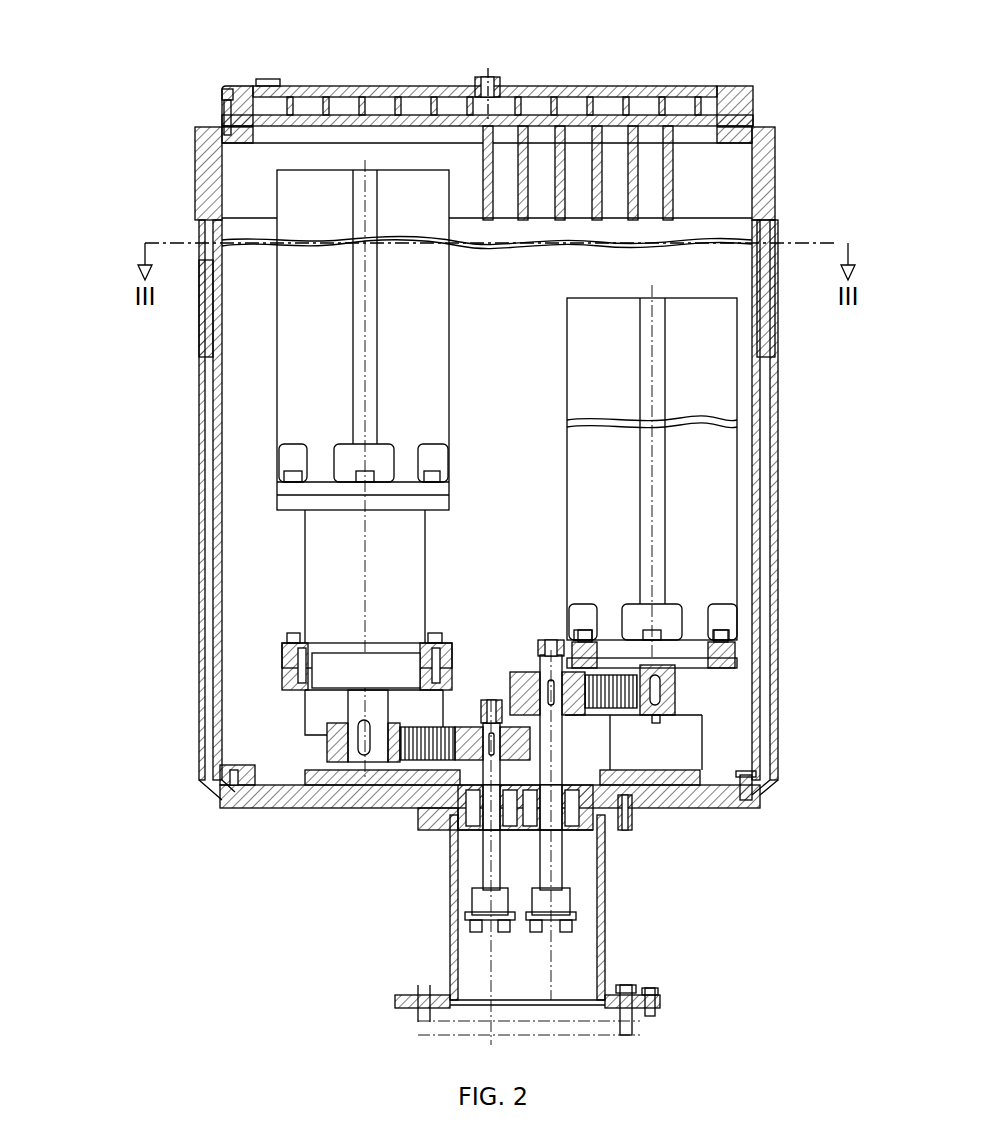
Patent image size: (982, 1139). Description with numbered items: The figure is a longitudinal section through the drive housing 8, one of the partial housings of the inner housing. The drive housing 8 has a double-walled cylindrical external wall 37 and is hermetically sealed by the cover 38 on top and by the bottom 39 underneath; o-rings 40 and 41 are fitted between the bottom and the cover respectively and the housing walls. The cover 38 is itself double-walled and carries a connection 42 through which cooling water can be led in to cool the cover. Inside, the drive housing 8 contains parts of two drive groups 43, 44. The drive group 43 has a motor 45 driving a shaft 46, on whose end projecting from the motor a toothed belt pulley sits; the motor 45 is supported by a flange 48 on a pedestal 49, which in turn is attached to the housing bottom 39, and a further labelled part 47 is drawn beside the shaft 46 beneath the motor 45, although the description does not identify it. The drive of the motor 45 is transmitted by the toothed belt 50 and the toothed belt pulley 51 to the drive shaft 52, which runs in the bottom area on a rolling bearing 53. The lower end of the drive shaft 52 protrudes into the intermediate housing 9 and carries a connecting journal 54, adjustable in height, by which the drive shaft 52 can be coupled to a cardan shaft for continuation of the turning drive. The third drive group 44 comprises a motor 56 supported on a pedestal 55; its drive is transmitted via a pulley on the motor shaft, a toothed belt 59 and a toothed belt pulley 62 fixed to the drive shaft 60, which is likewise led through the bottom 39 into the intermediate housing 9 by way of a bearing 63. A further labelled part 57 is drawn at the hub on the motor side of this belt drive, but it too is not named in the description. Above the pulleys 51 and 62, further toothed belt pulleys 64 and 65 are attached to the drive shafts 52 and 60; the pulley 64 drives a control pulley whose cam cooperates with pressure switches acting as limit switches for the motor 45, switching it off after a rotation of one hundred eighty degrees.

The drive housing 8 is at (295, 810).
The intermediate housing 9 is at (438, 918).
The double-walled cylindrical external wall 37 is at (200, 438).
The cover 38 is at (408, 86).
The bottom 39 is at (430, 826).
The o-ring 40 is at (240, 806).
The o-ring 41 is at (243, 90).
The connection 42 is at (497, 78).
The drive group 43 is at (290, 530).
The third drive group 44 is at (565, 590).
The motor 45 is at (300, 393).
The shaft 46 is at (360, 712).
The guide body 47 is at (332, 722).
The flange 48 is at (443, 645).
The pedestal 49 is at (430, 683).
The toothed belt 50 is at (405, 790).
The toothed belt pulley 51 is at (420, 808).
The drive shaft 52 is at (458, 872).
The rolling bearing 53 is at (458, 838).
The connecting journal 54 is at (524, 996).
The pedestal 55 is at (685, 718).
The motor 56 is at (595, 470).
The hub 57 is at (660, 675).
The toothed belt 59 is at (692, 810).
The drive shaft 60 is at (553, 866).
The toothed belt pulley 62 is at (522, 722).
The bearing 63 is at (605, 855).
The toothed belt pulley 64 is at (488, 700).
The toothed belt pulley 65 is at (553, 640).